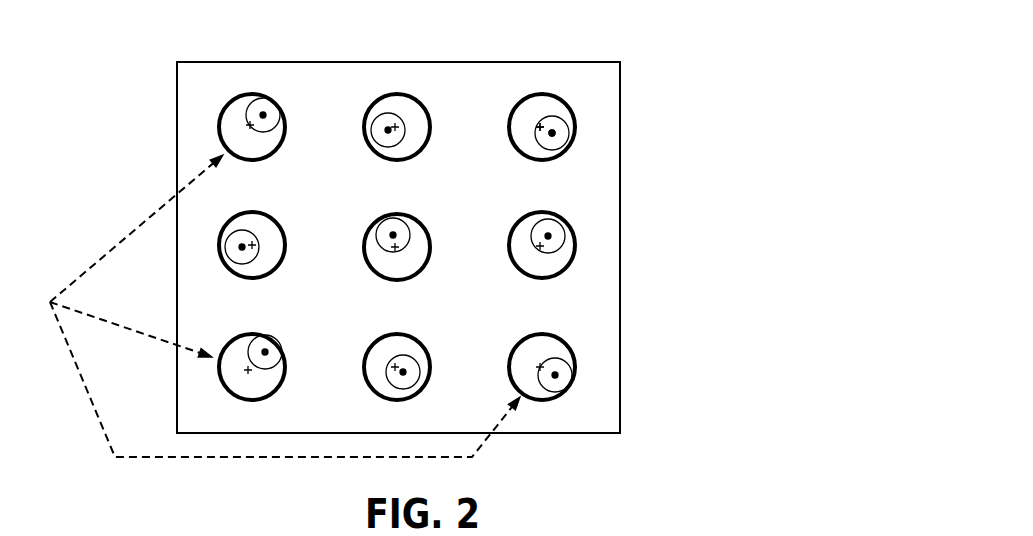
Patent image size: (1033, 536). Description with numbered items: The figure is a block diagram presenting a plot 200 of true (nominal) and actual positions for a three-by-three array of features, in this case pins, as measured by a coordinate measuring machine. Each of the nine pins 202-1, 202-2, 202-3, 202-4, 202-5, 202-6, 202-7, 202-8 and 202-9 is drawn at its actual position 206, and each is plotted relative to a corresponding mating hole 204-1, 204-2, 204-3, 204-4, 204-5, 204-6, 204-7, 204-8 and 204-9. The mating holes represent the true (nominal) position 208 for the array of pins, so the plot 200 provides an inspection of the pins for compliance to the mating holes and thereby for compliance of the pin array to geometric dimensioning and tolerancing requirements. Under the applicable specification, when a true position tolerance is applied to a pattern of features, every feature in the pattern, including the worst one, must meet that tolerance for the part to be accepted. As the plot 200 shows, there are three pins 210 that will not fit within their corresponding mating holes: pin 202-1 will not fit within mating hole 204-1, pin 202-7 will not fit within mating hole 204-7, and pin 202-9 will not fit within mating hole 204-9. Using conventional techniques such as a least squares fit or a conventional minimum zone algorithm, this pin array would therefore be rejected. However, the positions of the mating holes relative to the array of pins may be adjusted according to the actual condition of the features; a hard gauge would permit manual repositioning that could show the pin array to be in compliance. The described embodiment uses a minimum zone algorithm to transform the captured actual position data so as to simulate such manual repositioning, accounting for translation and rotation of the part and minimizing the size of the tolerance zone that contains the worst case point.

The plot 200 is at (732, 391).
The pin 202-1 is at (263, 115).
The pin 202-2 is at (388, 130).
The pin 202-3 is at (562, 148).
The pin 202-4 is at (242, 247).
The pin 202-5 is at (393, 236).
The pin 202-6 is at (548, 236).
The pin 202-7 is at (265, 352).
The pin 202-8 is at (403, 372).
The pin 202-9 is at (555, 375).
The mating hole 204-1 is at (248, 127).
The mating hole 204-2 is at (398, 118).
The mating hole 204-3 is at (540, 128).
The mating hole 204-4 is at (258, 240).
The mating hole 204-5 is at (401, 253).
The mating hole 204-6 is at (548, 246).
The mating hole 204-7 is at (248, 370).
The mating hole 204-8 is at (395, 368).
The mating hole 204-9 is at (540, 367).
The actual position 206 is at (740, 118).
The true (nominal) position 208 is at (740, 68).
The pins that will not fit 210 is at (268, 306).